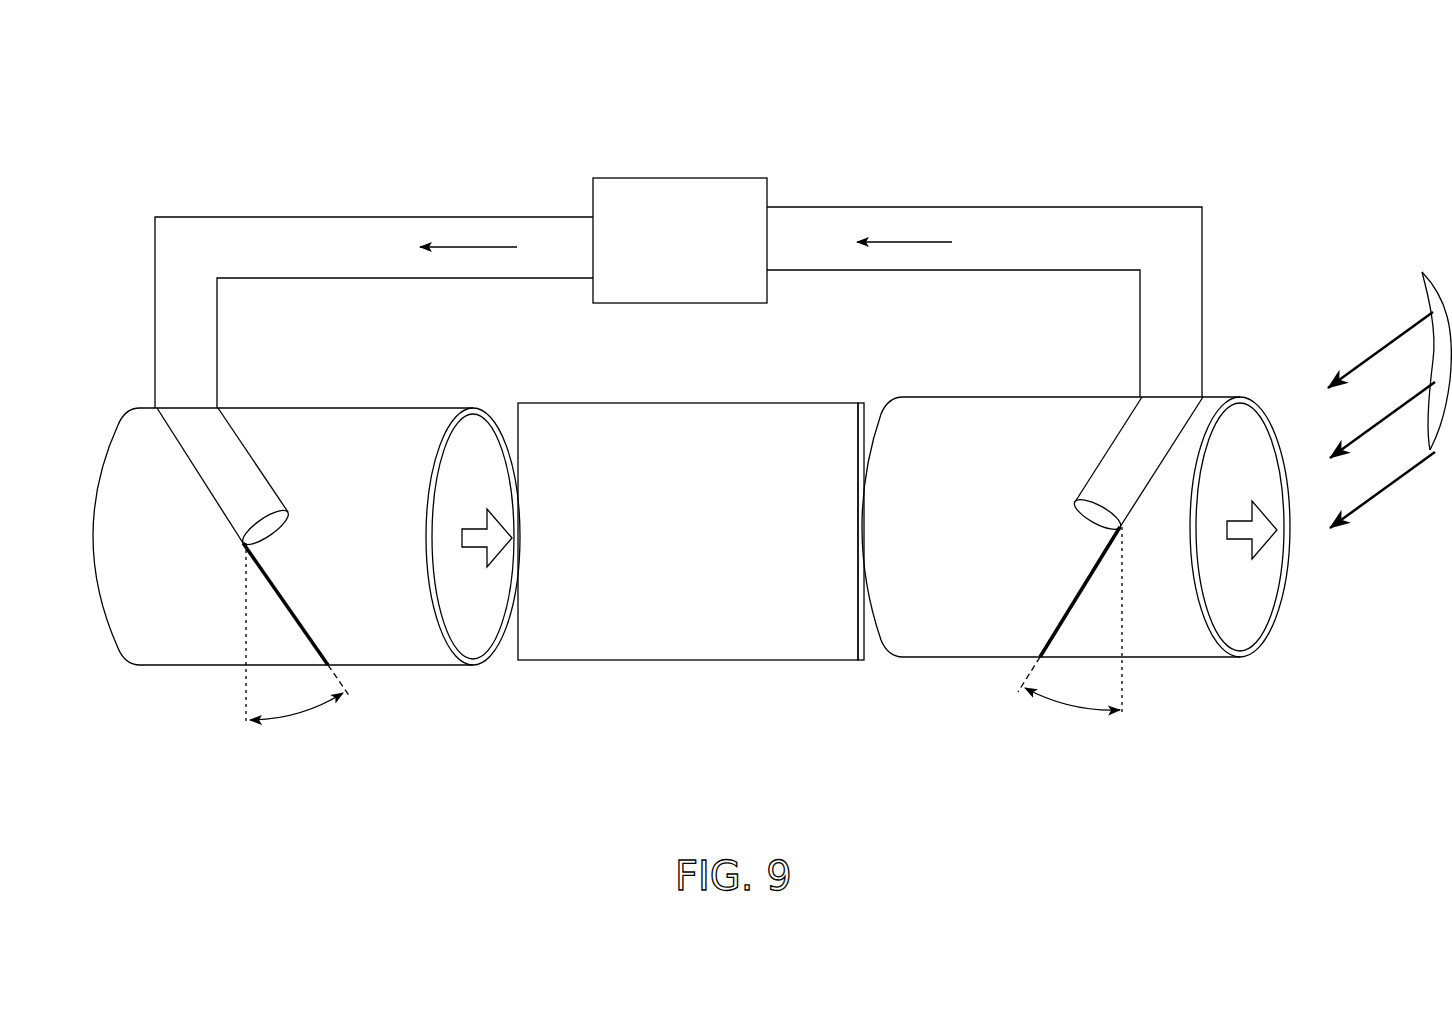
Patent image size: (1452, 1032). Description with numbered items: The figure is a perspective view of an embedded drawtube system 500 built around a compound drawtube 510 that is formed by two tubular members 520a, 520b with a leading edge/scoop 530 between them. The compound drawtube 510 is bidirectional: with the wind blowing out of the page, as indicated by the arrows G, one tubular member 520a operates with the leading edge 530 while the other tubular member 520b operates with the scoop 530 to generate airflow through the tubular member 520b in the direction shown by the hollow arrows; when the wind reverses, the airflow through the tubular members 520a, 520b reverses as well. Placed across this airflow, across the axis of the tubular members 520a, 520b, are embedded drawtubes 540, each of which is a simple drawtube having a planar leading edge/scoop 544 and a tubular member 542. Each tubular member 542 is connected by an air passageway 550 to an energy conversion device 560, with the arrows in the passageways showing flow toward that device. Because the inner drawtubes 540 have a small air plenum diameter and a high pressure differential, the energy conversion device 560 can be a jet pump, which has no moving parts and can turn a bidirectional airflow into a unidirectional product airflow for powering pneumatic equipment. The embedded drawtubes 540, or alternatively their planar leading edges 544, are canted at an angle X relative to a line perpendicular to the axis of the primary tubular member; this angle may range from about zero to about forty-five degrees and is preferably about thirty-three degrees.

The embedded drawtube system 500 is at (772, 424).
The compound drawtube 510 is at (691, 564).
The tubular member 520a is at (198, 667).
The tubular member 520b is at (973, 660).
The leading edge/scoop 530 is at (740, 403).
The embedded drawtube 540 is at (665, 547).
The tubular member 542 is at (232, 487).
The planar leading edge/scoop 544 is at (287, 597).
The air passageway 550 is at (403, 220).
The energy conversion device 560 is at (663, 187).
The angle X is at (293, 717).
The arrows G is at (1389, 389).